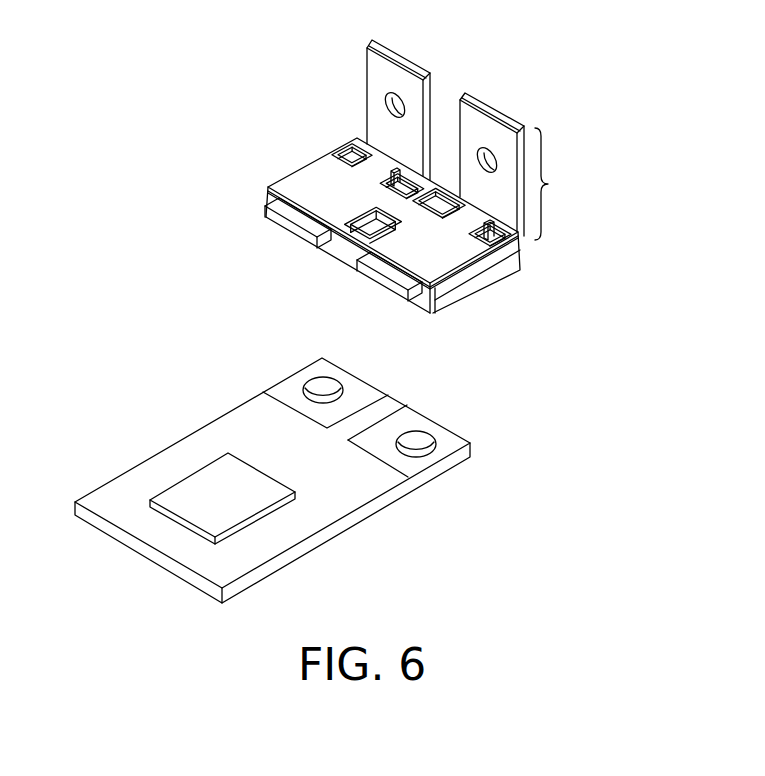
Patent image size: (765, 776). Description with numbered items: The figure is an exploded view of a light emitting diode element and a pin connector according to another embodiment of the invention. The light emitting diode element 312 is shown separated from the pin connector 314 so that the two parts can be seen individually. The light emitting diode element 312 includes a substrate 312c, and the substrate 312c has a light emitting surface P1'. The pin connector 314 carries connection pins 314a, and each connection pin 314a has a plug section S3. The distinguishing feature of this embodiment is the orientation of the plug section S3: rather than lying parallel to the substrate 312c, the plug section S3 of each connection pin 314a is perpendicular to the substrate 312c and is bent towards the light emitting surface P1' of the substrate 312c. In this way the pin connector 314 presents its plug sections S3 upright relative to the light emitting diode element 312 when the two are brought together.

The pin connector 314 is at (298, 149).
The connection pin 314a is at (483, 122).
The plug section S3 is at (558, 184).
The light emitting diode element 312 is at (339, 551).
The substrate 312c is at (233, 423).
The light emitting surface P1' is at (190, 467).